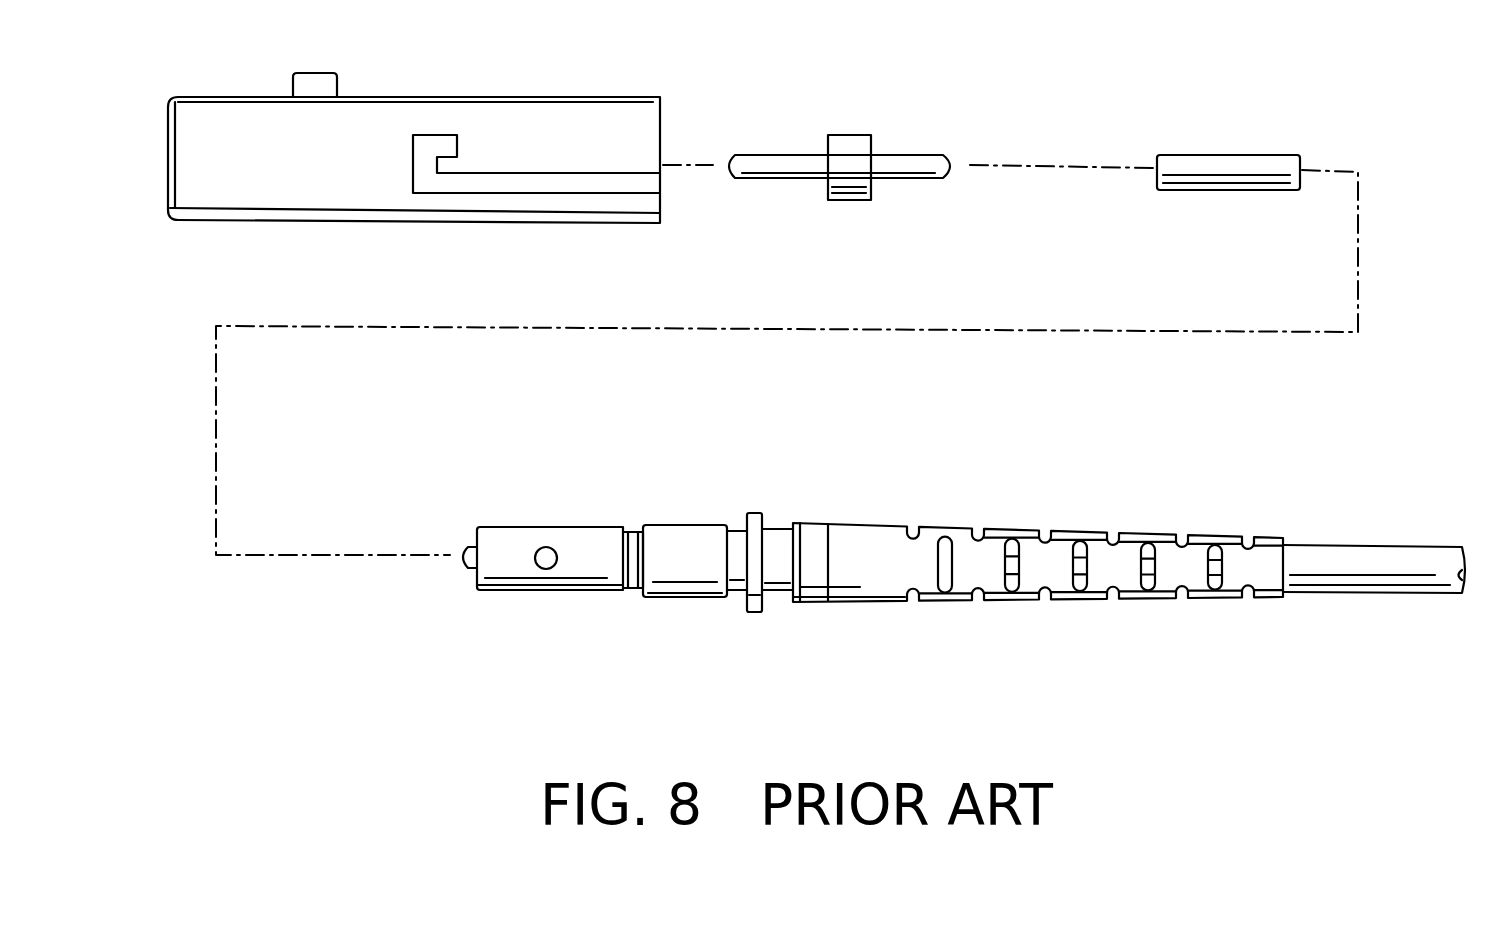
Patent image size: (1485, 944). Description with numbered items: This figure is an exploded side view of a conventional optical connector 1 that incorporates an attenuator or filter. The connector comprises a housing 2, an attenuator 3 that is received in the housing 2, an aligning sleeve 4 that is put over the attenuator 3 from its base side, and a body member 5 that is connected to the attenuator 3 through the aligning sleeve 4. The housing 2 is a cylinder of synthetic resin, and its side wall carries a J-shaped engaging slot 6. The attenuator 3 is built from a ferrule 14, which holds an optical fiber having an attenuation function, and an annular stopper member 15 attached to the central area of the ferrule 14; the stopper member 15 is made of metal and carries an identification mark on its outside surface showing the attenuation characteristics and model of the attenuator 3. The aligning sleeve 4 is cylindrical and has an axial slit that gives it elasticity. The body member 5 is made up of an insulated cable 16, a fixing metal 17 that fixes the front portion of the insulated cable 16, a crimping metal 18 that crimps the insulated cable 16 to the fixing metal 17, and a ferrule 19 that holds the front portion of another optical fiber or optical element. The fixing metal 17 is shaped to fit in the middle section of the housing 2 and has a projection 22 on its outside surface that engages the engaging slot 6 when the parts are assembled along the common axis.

The optical connector 1 is at (1020, 78).
The housing 2 is at (513, 97).
The attenuator 3 is at (839, 127).
The aligning sleeve 4 is at (1245, 178).
The body member 5 is at (852, 551).
The engaging slot 6 is at (507, 185).
The ferrule 14 is at (771, 163).
The stopper member 15 is at (845, 148).
The insulated cable 16 is at (1375, 565).
The fixing metal 17 is at (523, 537).
The crimping metal 18 is at (683, 547).
The ferrule 19 is at (466, 566).
The projection 22 is at (548, 568).